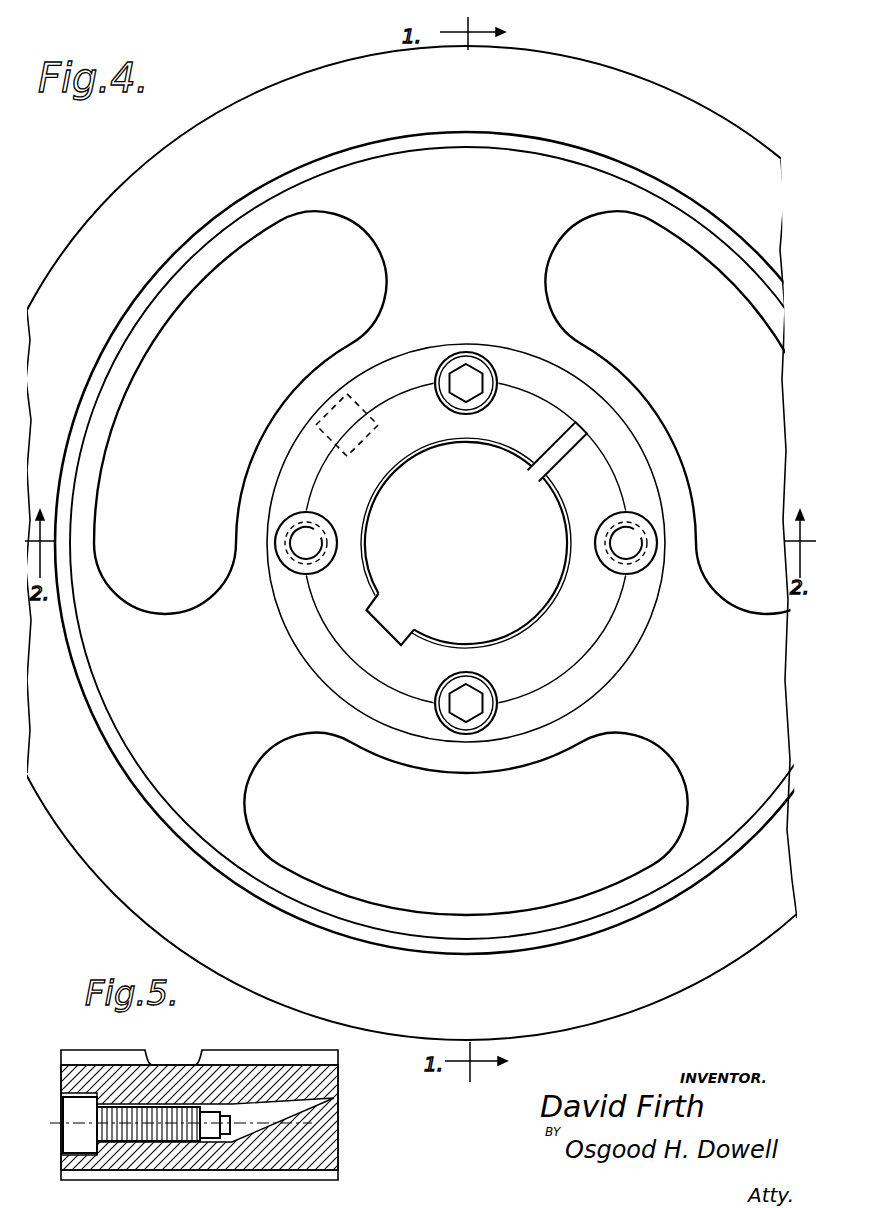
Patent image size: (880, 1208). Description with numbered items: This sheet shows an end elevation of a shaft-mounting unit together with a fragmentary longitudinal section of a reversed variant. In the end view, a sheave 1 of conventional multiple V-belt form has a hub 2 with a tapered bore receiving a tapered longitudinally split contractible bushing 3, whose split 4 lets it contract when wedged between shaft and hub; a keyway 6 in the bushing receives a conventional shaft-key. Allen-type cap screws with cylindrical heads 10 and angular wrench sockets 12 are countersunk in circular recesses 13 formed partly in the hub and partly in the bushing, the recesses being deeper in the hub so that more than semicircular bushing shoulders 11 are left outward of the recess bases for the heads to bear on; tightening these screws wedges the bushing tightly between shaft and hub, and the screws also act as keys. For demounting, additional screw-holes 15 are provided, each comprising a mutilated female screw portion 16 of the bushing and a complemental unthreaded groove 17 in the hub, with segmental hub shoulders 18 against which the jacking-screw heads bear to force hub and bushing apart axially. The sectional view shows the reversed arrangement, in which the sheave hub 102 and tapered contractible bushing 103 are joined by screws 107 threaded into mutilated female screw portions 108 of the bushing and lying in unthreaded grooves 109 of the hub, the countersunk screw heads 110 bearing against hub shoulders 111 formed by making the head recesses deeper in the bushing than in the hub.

In FIG. 4, the sheave 1 is at (97, 210).
In FIG. 4, the hub 2 is at (400, 718).
In FIG. 4, the tapered longitudinally split contractible bushing 3 is at (547, 674).
In FIG. 4, the split 4 is at (575, 437).
In FIG. 4, the keyway 6 is at (384, 628).
In FIG. 4, the cylindrical heads 10 is at (484, 560).
In FIG. 4, the bushing shoulders 11 is at (316, 425).
In FIG. 4, the angular wrench sockets 12 is at (470, 381).
In FIG. 4, the circular recesses 13 is at (421, 560).
In FIG. 4, the additional screw-holes 15 is at (476, 579).
In FIG. 4, the mutilated female screw portions 16 is at (322, 525).
In FIG. 4, the unthreaded grooves 17 is at (628, 544).
In FIG. 4, the hub shoulders 18 is at (461, 559).
In FIG. 5, the sheave hub 102 is at (283, 1082).
In FIG. 5, the tapered contractible bushing 103 is at (341, 1143).
In FIG. 5, the screws 107 is at (168, 1141).
In FIG. 5, the mutilated female screw portions 108 is at (207, 1145).
In FIG. 5, the unthreaded grooves 109 is at (208, 1112).
In FIG. 5, the screw heads 110 is at (72, 1122).
In FIG. 5, the hub shoulders 111 is at (122, 1148).